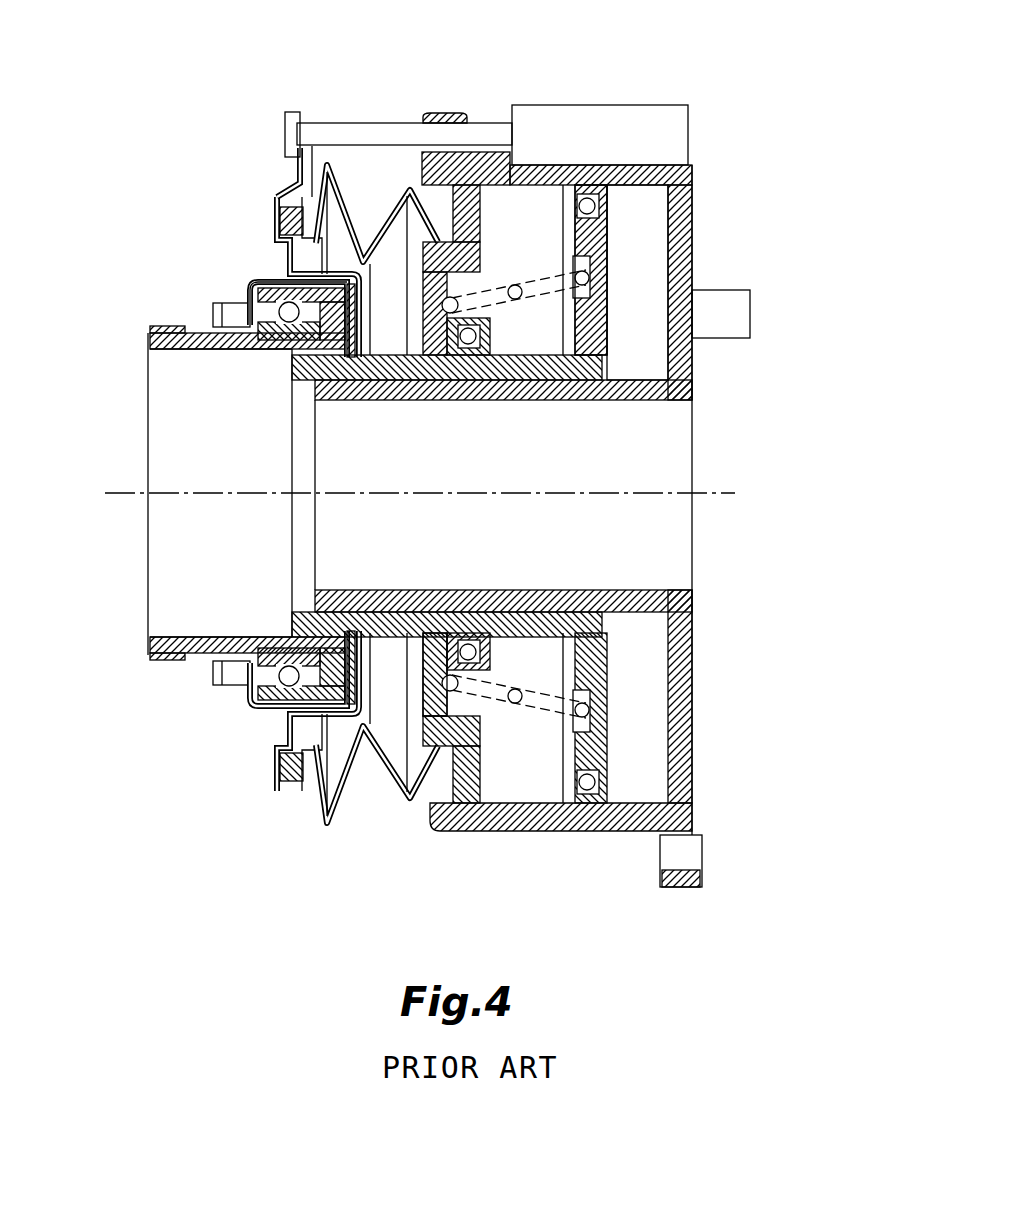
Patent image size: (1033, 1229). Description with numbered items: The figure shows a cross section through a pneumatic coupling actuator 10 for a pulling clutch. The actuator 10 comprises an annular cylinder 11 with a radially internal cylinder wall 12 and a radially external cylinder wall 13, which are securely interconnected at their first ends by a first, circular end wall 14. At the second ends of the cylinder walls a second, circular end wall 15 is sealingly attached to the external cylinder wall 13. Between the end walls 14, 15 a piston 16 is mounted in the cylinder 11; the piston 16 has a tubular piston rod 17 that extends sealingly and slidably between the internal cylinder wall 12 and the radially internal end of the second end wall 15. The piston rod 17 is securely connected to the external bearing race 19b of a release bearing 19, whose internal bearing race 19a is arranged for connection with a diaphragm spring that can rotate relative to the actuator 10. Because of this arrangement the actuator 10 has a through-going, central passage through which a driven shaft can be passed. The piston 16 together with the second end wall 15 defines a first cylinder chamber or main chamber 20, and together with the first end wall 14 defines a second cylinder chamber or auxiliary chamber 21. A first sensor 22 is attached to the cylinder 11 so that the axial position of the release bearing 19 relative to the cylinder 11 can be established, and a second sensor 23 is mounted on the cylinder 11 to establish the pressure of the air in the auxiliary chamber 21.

The actuator 10 is at (685, 84).
The annular cylinder 11 is at (692, 270).
The radially internal cylinder wall 12 is at (630, 385).
The radially external cylinder wall 13 is at (623, 813).
The first circular end wall 14 is at (680, 705).
The second circular end wall 15 is at (467, 765).
The piston 16 is at (570, 252).
The tubular piston rod 17 is at (505, 400).
The release bearing 19 is at (220, 298).
The internal bearing race 19a is at (267, 349).
The external bearing race 19b is at (270, 291).
The main chamber 20 is at (517, 213).
The auxiliary chamber 21 is at (652, 206).
The first sensor 22 is at (665, 133).
The second sensor 23 is at (723, 323).